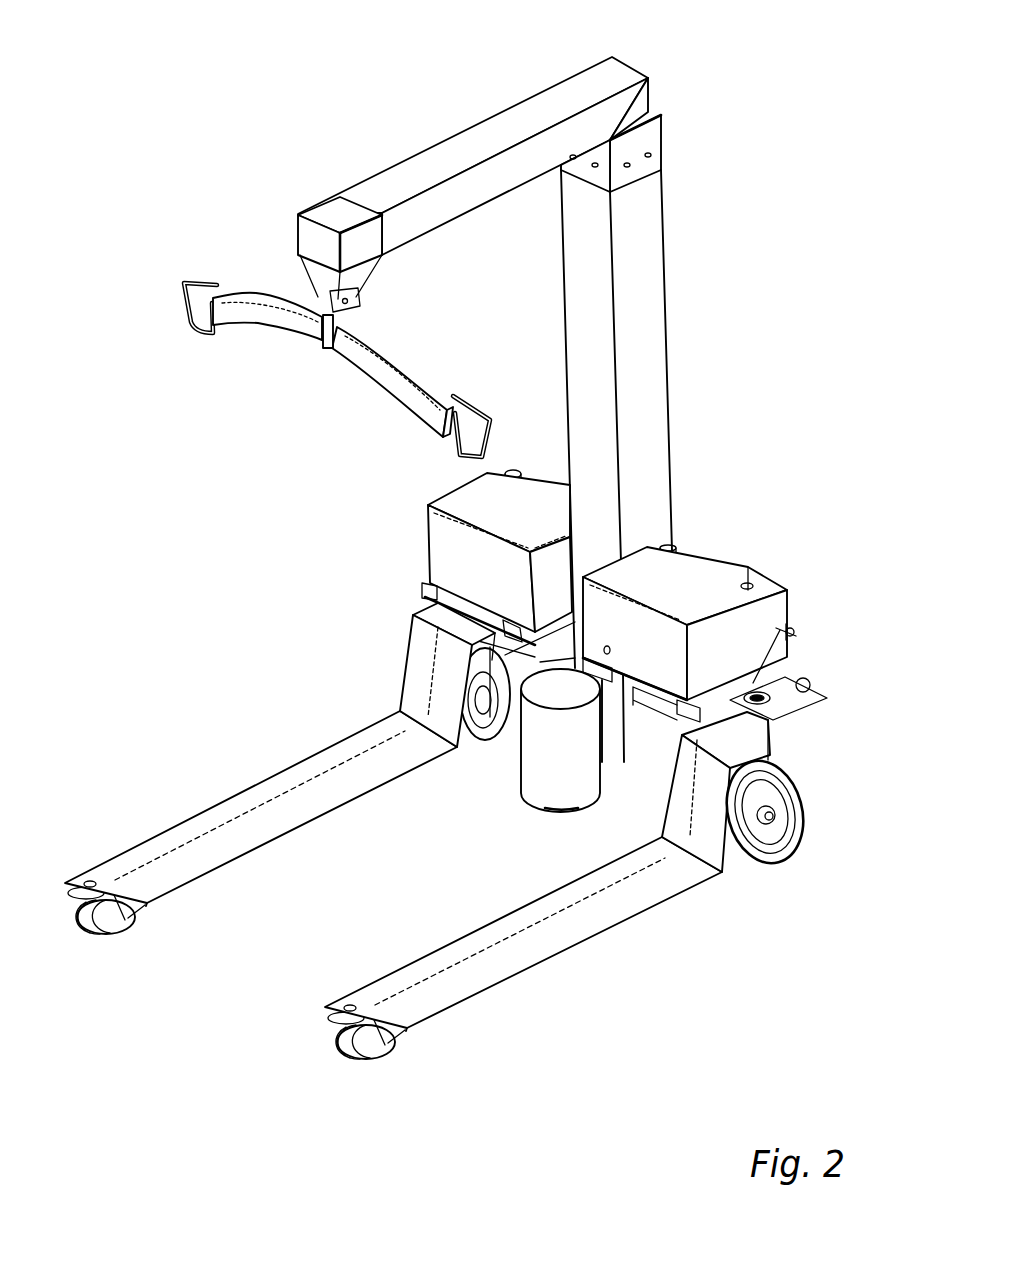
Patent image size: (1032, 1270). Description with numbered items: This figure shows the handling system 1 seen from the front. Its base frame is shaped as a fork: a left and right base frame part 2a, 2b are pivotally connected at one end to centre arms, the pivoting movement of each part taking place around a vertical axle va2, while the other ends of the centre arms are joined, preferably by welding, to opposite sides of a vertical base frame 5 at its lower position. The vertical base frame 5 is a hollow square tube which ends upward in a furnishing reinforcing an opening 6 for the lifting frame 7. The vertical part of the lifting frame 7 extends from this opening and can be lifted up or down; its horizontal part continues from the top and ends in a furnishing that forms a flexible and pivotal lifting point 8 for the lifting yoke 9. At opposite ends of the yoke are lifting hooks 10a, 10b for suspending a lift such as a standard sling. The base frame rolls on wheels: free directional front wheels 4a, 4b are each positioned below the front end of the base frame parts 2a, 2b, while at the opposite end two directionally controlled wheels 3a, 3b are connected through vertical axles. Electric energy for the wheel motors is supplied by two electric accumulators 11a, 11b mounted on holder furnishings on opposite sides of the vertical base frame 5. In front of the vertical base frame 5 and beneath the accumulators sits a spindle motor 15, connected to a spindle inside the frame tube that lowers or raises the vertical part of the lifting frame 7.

The handling system 1 is at (262, 88).
The left base frame part 2a is at (325, 800).
The right base frame part 2b is at (553, 950).
The wheel 3a is at (478, 745).
The wheel 3b is at (763, 862).
The front wheel 4a is at (113, 940).
The front wheel 4b is at (374, 1062).
The vertical base frame 5 is at (653, 282).
The opening 6 is at (660, 140).
The lifting frame 7 is at (570, 87).
The lifting point 8 is at (377, 242).
The lifting yoke 9 is at (250, 300).
The lifting hook 10a is at (205, 278).
The lifting hook 10b is at (458, 392).
The electric accumulator 11a is at (535, 478).
The electric accumulator 11b is at (727, 557).
The spindle motor 15 is at (547, 795).
The vertical axle va2 is at (790, 804).